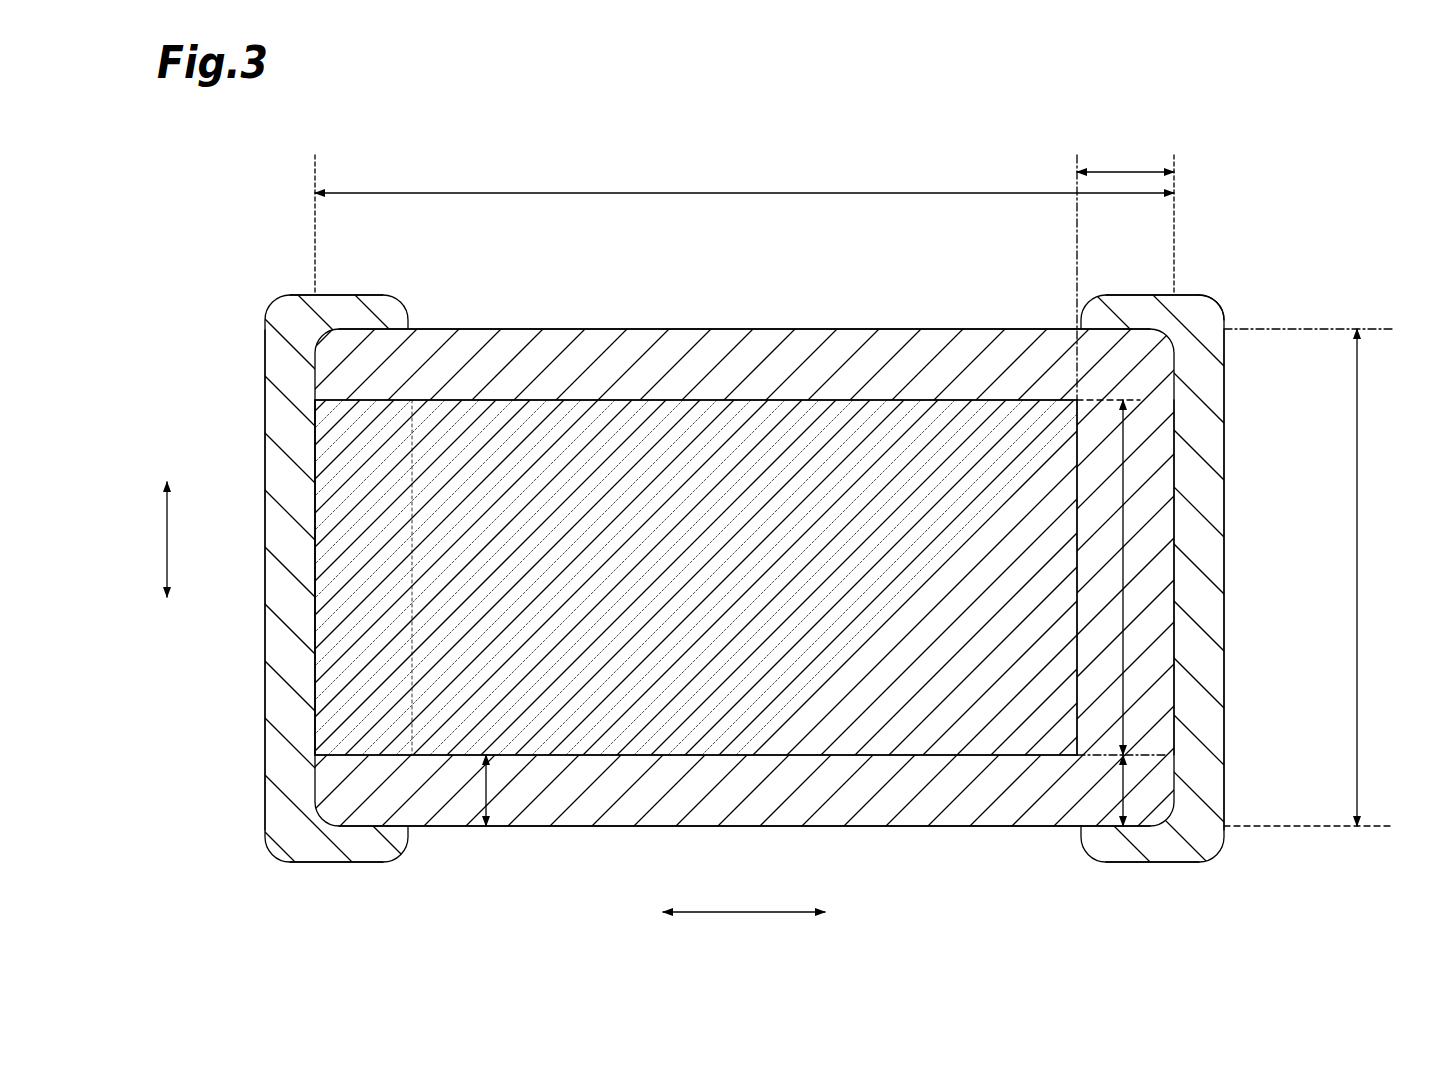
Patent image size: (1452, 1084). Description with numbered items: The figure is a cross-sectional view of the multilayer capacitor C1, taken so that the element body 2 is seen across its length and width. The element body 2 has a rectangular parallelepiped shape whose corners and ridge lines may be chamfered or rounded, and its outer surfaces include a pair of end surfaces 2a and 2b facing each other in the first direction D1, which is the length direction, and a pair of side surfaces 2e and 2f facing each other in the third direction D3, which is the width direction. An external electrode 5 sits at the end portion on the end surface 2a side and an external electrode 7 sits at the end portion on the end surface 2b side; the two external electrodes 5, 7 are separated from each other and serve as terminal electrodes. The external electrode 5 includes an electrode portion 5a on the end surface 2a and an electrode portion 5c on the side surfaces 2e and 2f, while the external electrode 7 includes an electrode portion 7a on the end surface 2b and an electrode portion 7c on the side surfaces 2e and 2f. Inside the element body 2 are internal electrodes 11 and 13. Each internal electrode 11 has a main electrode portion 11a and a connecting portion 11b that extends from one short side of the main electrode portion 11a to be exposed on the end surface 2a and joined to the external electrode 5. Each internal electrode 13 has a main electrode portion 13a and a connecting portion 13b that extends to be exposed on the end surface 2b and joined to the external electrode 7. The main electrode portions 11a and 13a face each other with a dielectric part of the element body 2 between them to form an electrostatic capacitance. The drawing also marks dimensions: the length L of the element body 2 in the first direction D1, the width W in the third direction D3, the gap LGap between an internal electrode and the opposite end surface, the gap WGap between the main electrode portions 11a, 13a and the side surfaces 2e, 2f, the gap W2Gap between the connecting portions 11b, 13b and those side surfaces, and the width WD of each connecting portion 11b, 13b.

The element body 2 is at (672, 338).
The end surface 2a is at (313, 680).
The end surface 2b is at (1175, 635).
The side surface 2e is at (868, 329).
The side surface 2f is at (820, 826).
The external electrode 5 is at (246, 469).
The electrode portion 5a is at (287, 587).
The electrode portion 5c is at (363, 298).
The external electrode 7 is at (1230, 492).
The electrode portion 7a is at (1207, 570).
The electrode portion 7c is at (1133, 312).
The internal electrode 11 is at (583, 396).
The main electrode portion 11a is at (776, 398).
The connecting portion 11b is at (360, 758).
The internal electrode 13 is at (715, 762).
The main electrode portion 13a is at (920, 760).
The connecting portion 13b is at (1135, 772).
The multilayer capacitor C1 is at (1160, 278).
The dimension L is at (722, 192).
The dimension LGap is at (1120, 170).
The dimension W is at (1358, 578).
The dimension WD is at (1125, 604).
The dimension WGap is at (474, 793).
The dimension W2Gap is at (1118, 794).
The first direction D1 is at (732, 912).
The third direction D3 is at (168, 520).